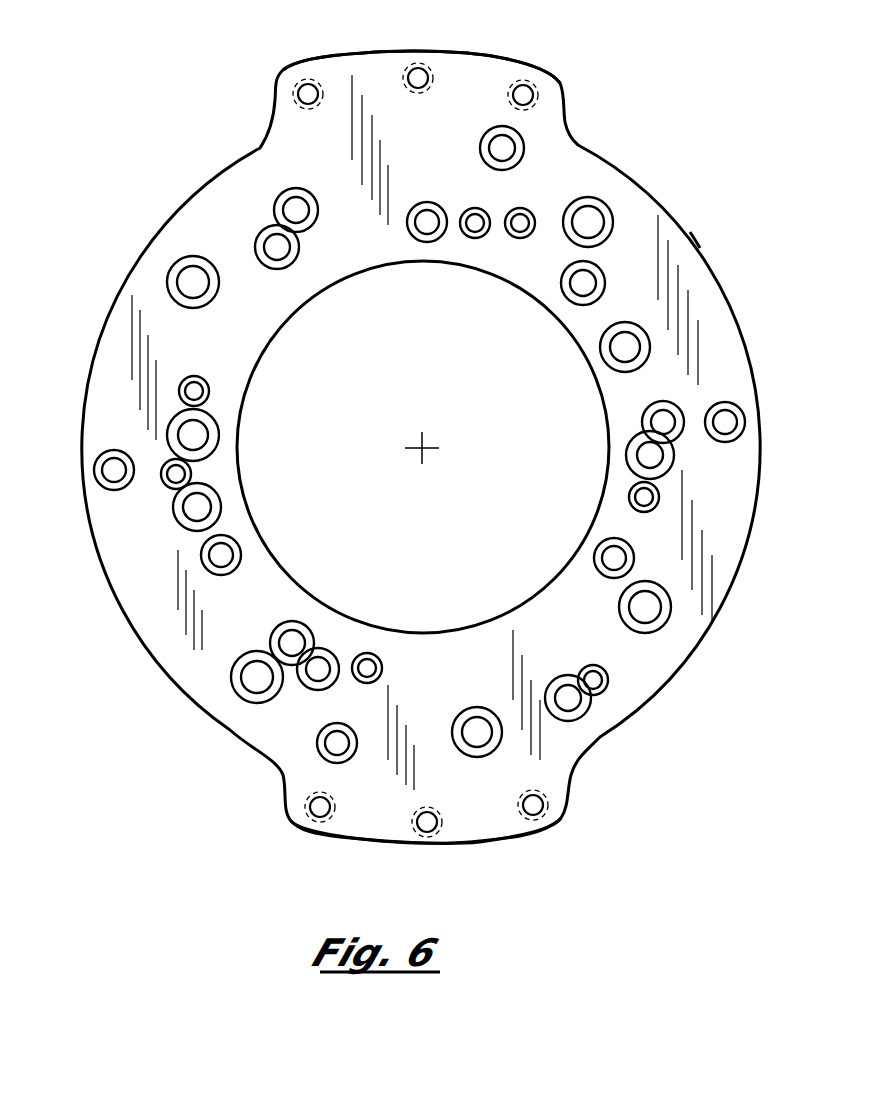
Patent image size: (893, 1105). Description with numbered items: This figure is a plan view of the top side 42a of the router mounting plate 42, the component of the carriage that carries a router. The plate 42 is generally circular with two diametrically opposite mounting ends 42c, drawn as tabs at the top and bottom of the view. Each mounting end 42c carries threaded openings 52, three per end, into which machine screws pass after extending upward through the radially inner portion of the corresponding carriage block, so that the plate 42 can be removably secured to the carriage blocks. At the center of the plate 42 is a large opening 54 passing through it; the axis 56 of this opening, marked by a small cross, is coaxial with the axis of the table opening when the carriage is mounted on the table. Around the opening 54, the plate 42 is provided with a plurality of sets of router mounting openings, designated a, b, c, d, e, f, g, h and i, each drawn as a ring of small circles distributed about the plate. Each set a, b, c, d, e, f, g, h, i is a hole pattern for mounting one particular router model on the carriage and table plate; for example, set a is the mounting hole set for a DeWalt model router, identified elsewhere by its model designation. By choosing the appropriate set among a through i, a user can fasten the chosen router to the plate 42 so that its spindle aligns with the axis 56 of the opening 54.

The router mounting plate 42 is at (655, 178).
The top side 42a is at (688, 232).
The mounting ends 42c is at (505, 56).
The threaded openings 52 is at (410, 80).
The opening 54 is at (324, 288).
The axis 56 is at (418, 443).
The router mounting opening set a is at (208, 437).
The router mounting opening set b is at (518, 144).
The router mounting opening set c is at (472, 238).
The router mounting opening set d is at (266, 234).
The router mounting opening set e is at (282, 199).
The router mounting opening set f is at (588, 204).
The router mounting opening set g is at (566, 293).
The router mounting opening set h is at (516, 238).
The router mounting opening set i is at (427, 240).